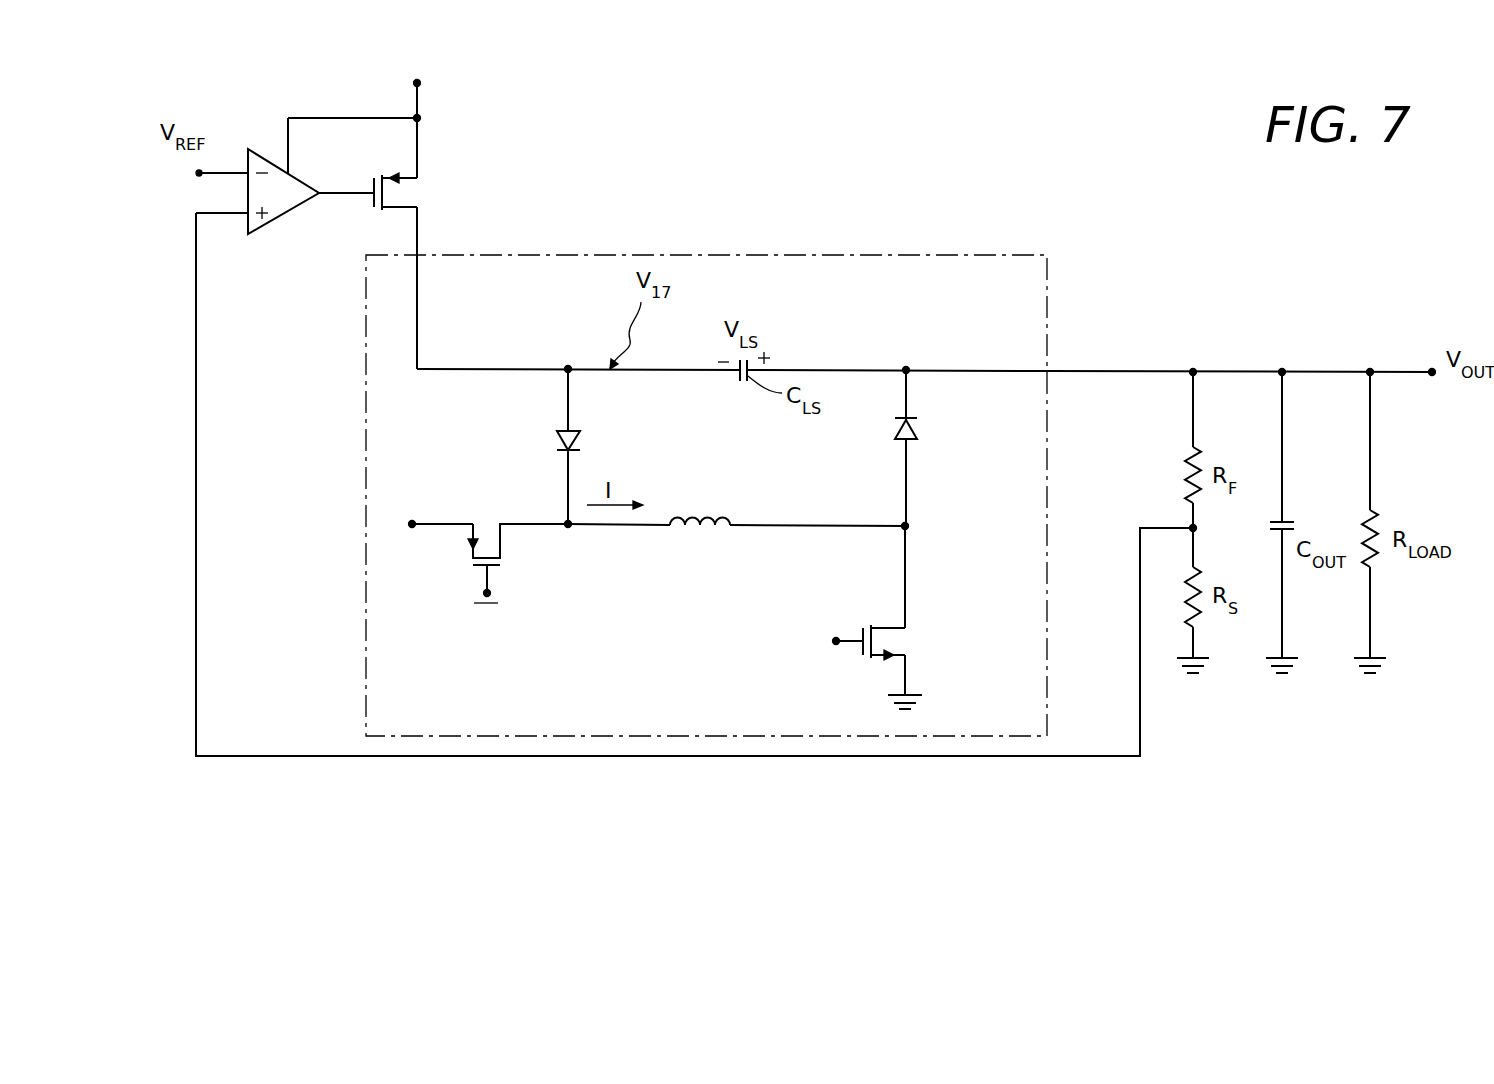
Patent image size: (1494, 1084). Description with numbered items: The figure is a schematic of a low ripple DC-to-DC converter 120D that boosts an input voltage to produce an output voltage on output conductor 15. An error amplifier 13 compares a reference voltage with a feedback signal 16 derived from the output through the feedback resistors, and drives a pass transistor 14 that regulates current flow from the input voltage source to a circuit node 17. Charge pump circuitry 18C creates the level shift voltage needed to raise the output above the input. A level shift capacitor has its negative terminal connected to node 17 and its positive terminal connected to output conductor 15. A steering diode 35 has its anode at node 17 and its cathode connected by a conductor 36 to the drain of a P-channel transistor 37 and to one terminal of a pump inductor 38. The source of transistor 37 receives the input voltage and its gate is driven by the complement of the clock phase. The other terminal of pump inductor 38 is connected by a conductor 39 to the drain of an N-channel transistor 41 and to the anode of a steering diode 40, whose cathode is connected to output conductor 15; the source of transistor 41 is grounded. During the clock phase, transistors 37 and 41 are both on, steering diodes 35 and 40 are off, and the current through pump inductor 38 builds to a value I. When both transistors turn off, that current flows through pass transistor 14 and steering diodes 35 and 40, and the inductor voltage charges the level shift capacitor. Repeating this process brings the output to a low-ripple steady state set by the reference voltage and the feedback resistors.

The error amplifier 13 is at (288, 205).
The pass transistor 14 is at (383, 193).
The output conductor 15 is at (1125, 371).
The feedback signal 16 is at (196, 653).
The circuit node 17 is at (460, 369).
The charge pump circuitry 18C is at (360, 489).
The steering diode 35 is at (580, 437).
The conductor 36 is at (569, 526).
The P-channel transistor 37 is at (488, 556).
The pump inductor 38 is at (688, 522).
The conductor 39 is at (908, 528).
The steering diode 40 is at (916, 432).
The N-channel transistor 41 is at (875, 640).
The DC-to-DC converter 120D is at (394, 806).